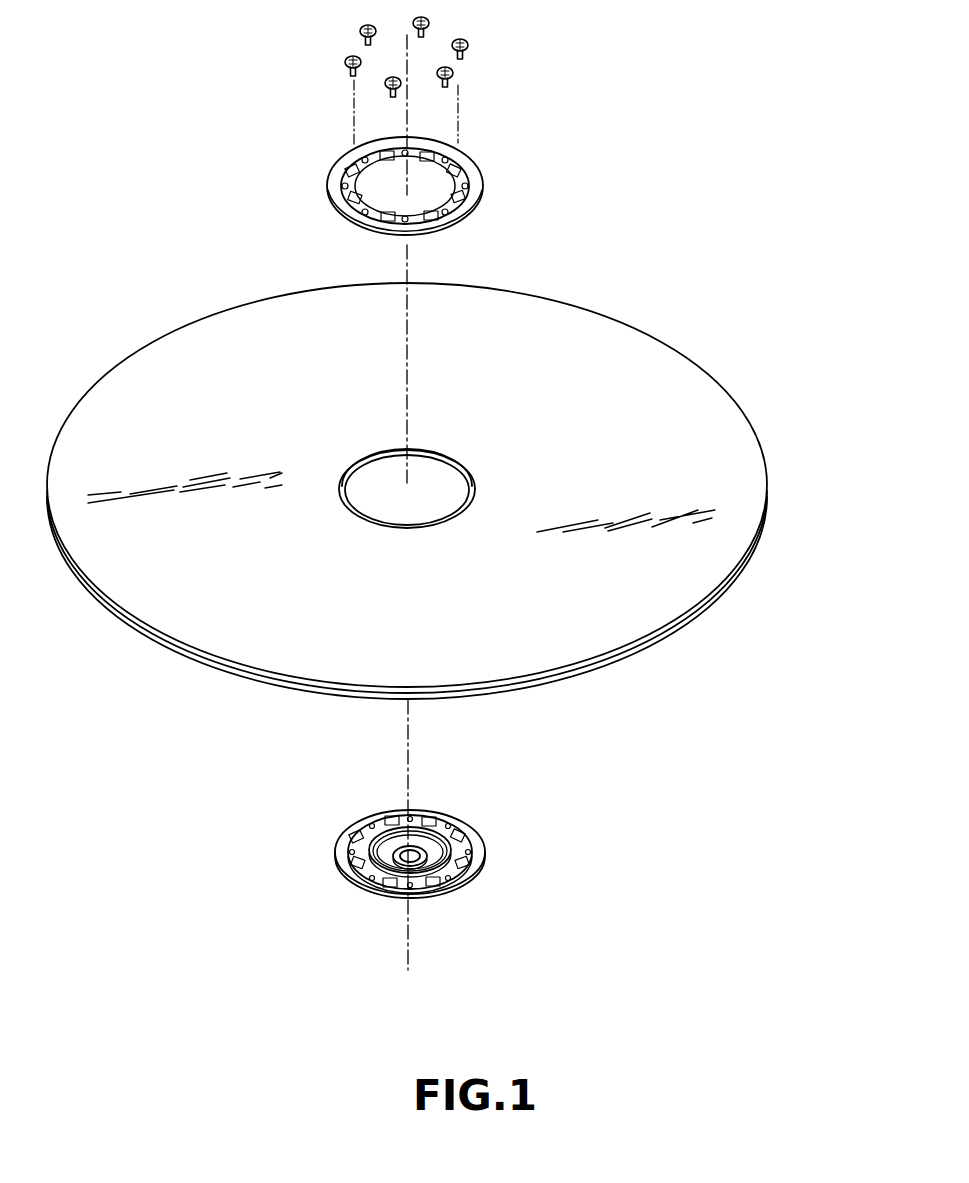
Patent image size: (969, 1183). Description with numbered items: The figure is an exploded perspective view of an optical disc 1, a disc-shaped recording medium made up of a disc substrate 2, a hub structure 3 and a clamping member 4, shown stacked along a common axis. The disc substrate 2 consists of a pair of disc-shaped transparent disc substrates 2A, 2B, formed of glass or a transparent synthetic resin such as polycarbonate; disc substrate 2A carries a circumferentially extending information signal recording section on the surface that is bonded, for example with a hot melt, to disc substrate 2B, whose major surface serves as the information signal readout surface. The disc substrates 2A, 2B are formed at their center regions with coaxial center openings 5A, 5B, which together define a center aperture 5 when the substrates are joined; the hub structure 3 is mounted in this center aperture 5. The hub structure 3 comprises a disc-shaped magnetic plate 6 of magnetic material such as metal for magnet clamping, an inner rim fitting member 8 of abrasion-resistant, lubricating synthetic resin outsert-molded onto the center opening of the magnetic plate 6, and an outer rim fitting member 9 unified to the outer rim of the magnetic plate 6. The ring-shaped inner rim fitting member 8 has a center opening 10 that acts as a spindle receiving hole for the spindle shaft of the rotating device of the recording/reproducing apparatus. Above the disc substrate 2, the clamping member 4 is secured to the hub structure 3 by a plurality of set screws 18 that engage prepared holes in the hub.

The optical disc 1 is at (693, 161).
The disc substrate 2 is at (455, 491).
The disc substrate 2A is at (432, 598).
The disc substrate 2B is at (742, 480).
The hub structure 3 is at (470, 820).
The clamping member 4 is at (493, 162).
The center aperture 5 is at (440, 462).
The center opening 5A is at (460, 487).
The center opening 5B is at (445, 455).
The magnetic plate 6 is at (457, 838).
The inner rim fitting member 8 is at (427, 848).
The outer rim fitting member 9 is at (473, 863).
The center opening 10 is at (410, 853).
The set screws 18 is at (500, 10).